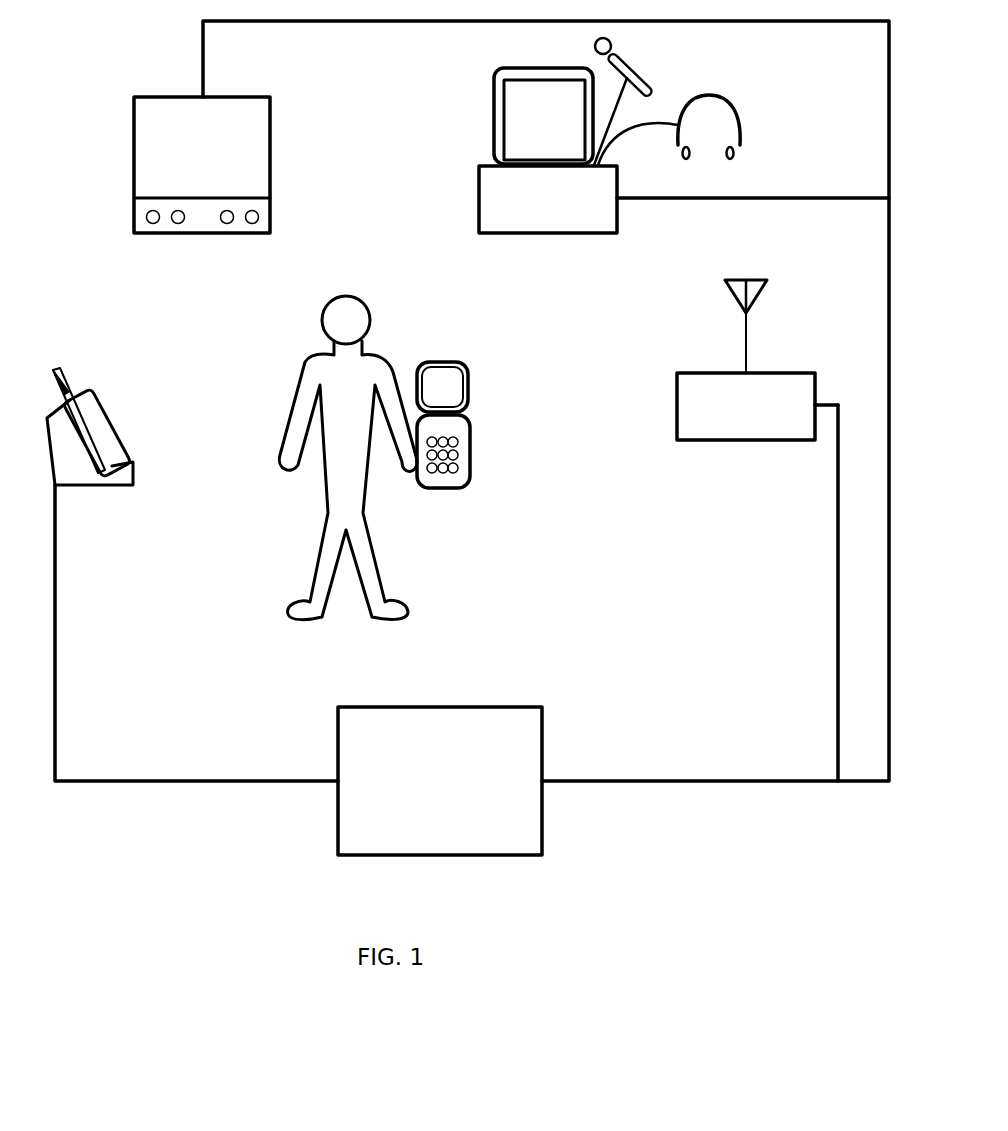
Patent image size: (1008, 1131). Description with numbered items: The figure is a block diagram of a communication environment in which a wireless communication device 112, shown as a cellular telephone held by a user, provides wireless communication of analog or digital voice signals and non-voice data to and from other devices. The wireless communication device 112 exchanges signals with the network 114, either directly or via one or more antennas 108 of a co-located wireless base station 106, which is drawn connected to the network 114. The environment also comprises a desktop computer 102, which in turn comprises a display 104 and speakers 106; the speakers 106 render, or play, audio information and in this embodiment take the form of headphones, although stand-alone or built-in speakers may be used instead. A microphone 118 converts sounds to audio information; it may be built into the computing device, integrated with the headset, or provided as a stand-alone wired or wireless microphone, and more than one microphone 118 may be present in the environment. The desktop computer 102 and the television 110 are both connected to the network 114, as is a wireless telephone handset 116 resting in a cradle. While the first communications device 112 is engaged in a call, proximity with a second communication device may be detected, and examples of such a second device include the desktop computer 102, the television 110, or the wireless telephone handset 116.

The desktop computer 102 is at (479, 213).
The display 104 is at (493, 135).
The speakers 106 is at (740, 112).
The antennas 108 is at (768, 283).
The television 110 is at (133, 180).
The wireless communication device 112 is at (469, 373).
The network 114 is at (440, 781).
The wireless telephone handset 116 is at (115, 415).
The microphone 118 is at (637, 62).